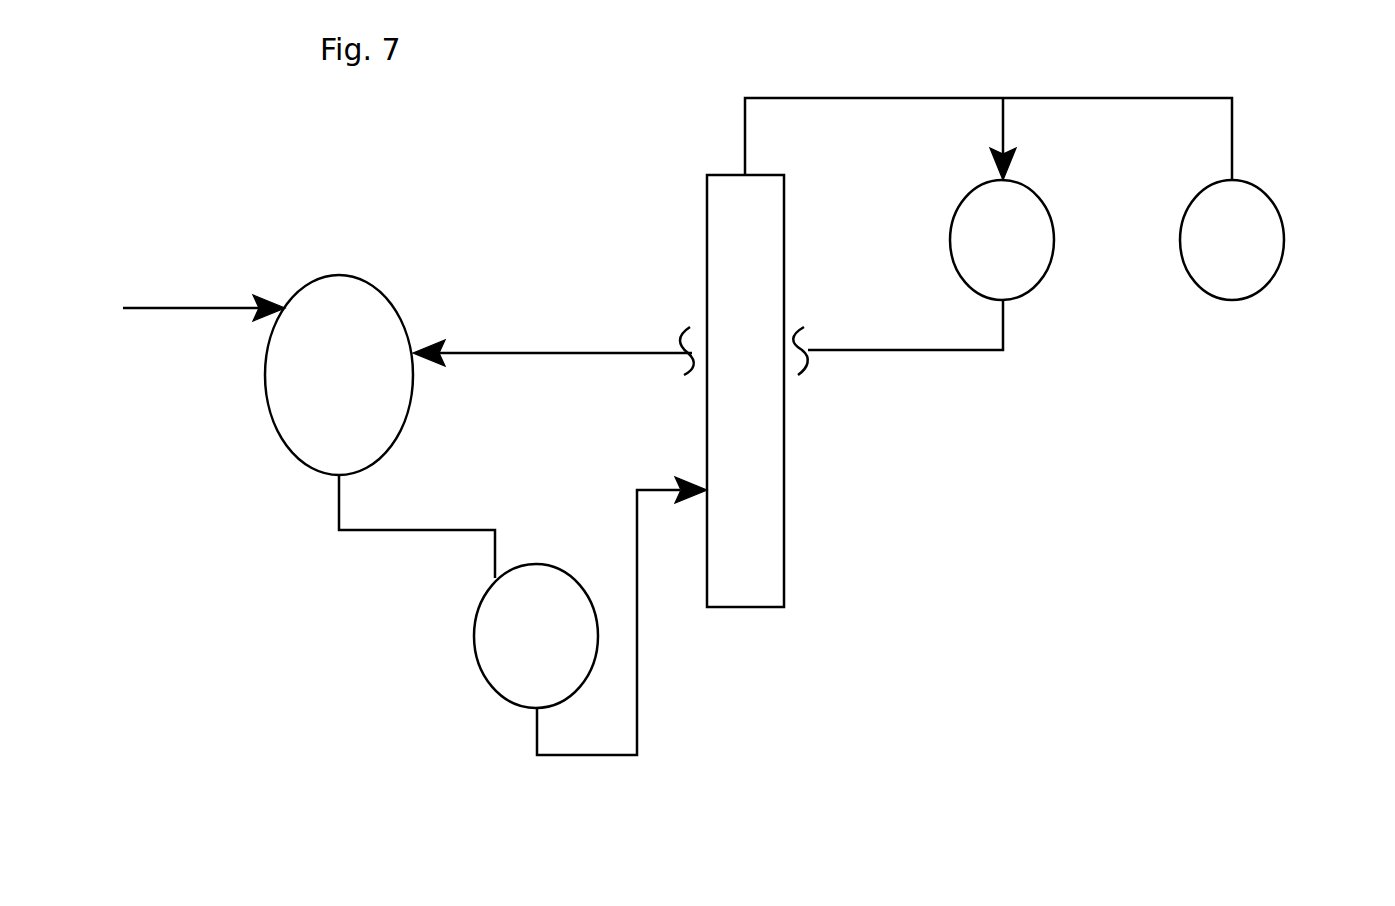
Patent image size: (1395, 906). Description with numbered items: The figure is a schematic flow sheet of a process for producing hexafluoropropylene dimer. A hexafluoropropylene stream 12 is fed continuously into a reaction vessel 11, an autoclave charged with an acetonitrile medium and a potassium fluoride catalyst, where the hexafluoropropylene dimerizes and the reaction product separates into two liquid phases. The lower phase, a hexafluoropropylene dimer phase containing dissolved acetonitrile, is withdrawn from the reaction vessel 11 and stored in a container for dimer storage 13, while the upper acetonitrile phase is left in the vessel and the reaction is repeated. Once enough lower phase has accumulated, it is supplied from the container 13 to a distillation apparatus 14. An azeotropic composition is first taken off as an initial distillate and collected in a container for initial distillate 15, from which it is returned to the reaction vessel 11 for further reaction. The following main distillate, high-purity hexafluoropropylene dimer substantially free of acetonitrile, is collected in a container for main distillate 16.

The reaction vessel 11 is at (300, 415).
The hexafluoropropylene stream 12 is at (183, 308).
The container for dimer storage 13 is at (512, 675).
The distillation apparatus 14 is at (757, 547).
The container for initial distillate 15 is at (1018, 271).
The container for main distillate 16 is at (1252, 272).